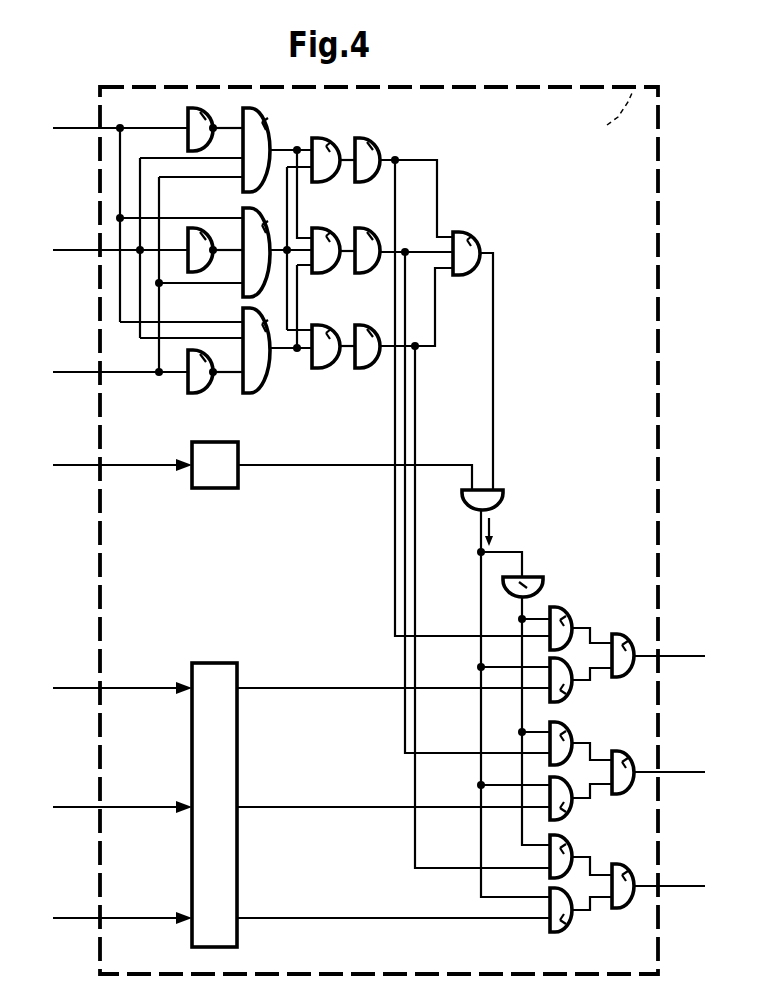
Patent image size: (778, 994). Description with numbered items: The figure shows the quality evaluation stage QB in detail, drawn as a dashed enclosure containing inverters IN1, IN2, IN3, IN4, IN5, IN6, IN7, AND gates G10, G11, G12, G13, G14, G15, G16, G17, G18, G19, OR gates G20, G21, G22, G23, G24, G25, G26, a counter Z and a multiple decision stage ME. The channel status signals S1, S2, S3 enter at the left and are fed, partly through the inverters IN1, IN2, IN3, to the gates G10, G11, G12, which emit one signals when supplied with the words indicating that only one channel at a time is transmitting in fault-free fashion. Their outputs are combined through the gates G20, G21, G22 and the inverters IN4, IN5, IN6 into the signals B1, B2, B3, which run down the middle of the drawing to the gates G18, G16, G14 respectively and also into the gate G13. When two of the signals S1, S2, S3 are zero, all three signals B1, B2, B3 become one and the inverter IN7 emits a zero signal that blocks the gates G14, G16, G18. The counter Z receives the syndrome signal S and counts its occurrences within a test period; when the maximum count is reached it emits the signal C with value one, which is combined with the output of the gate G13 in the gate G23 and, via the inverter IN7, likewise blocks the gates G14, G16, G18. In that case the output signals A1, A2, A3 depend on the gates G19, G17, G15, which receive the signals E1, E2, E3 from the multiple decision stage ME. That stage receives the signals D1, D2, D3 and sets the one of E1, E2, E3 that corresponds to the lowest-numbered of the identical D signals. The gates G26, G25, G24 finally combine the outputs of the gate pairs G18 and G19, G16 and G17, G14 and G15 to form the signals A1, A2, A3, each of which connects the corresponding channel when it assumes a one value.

The quality evaluation stage QB is at (572, 88).
The signal S1 is at (120, 114).
The signal S2 is at (120, 236).
The signal S3 is at (120, 358).
The syndrome signal S is at (122, 452).
The counter output signal C is at (320, 458).
The counter Z is at (225, 452).
The inverter IN1 is at (199, 123).
The inverter IN2 is at (199, 245).
The inverter IN3 is at (199, 366).
The inverter IN4 is at (404, 175).
The inverter IN5 is at (402, 237).
The inverter IN6 is at (402, 318).
The inverter IN7 is at (533, 700).
The AND gate G10 is at (277, 144).
The AND gate G11 is at (277, 242).
The AND gate G12 is at (277, 337).
The AND gate G13 is at (482, 356).
The AND gate G14 is at (581, 616).
The AND gate G15 is at (581, 688).
The AND gate G16 is at (581, 738).
The AND gate G17 is at (581, 802).
The AND gate G18 is at (581, 852).
The AND gate G19 is at (581, 914).
The OR gate G20 is at (330, 146).
The OR gate G21 is at (330, 237).
The OR gate G22 is at (330, 331).
The OR gate G23 is at (506, 686).
The OR gate G24 is at (657, 643).
The OR gate G25 is at (658, 761).
The OR gate G26 is at (658, 874).
The signal B1 is at (472, 379).
The signal B2 is at (477, 486).
The signal B3 is at (480, 591).
The multiple decision stage ME is at (233, 670).
The signal D1 is at (122, 905).
The signal D2 is at (122, 794).
The signal D3 is at (122, 675).
The signal E1 is at (393, 902).
The signal E2 is at (393, 791).
The signal E3 is at (393, 672).
The signal A1 is at (669, 871).
The signal A2 is at (669, 757).
The signal A3 is at (669, 640).